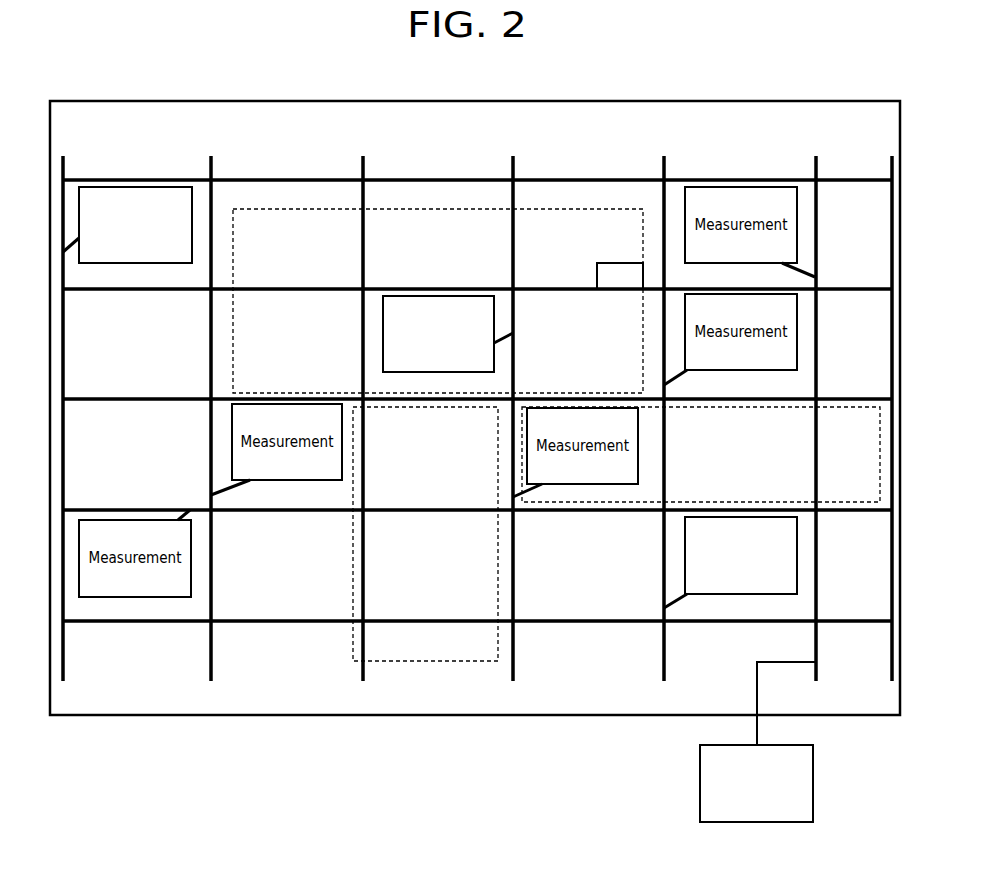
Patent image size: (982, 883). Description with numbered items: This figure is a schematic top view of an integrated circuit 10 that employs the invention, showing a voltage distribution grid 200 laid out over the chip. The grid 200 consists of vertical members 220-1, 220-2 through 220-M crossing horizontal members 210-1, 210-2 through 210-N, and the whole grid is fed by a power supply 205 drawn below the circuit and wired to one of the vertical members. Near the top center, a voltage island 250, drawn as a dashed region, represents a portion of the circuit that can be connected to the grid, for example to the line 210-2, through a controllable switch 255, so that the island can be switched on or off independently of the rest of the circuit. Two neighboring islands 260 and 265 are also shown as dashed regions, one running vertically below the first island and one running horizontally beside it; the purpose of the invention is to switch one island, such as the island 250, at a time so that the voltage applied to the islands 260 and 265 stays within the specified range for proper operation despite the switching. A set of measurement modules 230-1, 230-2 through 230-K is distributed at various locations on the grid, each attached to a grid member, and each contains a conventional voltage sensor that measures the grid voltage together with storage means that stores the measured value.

The integrated circuit 10 is at (165, 702).
The grid 200 is at (440, 171).
The power supply 205 is at (700, 788).
The horizontal member 210-1 is at (144, 180).
The horizontal member 210-2 is at (90, 289).
The horizontal member 210-N is at (103, 621).
The vertical member 220-1 is at (63, 168).
The vertical member 220-2 is at (211, 168).
The vertical member 220-M is at (892, 168).
The measurement module 230-1 is at (112, 263).
The measurement module 230-2 is at (473, 370).
The measurement module 230-K is at (720, 595).
The voltage island 250 is at (543, 218).
The controllable switch 255 is at (608, 274).
The neighboring island 260 is at (357, 518).
The neighboring island 265 is at (608, 488).